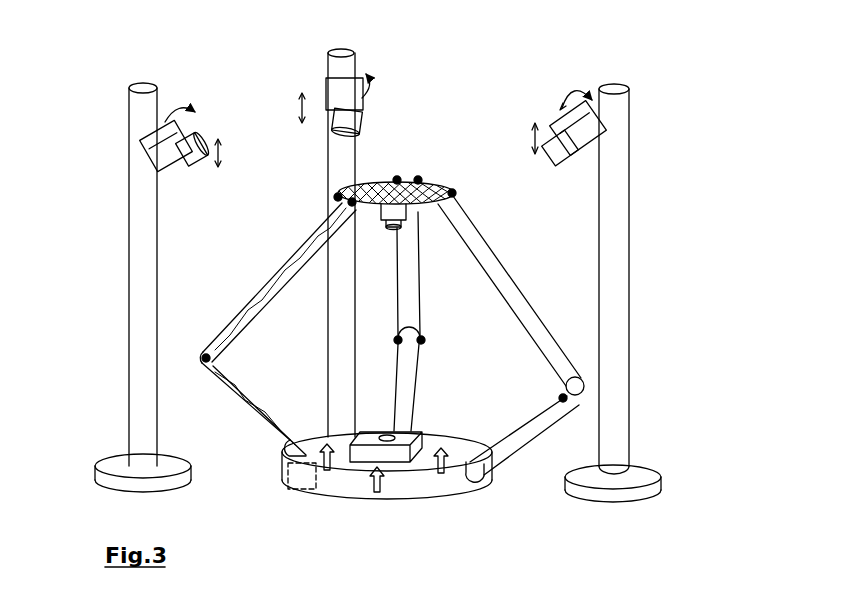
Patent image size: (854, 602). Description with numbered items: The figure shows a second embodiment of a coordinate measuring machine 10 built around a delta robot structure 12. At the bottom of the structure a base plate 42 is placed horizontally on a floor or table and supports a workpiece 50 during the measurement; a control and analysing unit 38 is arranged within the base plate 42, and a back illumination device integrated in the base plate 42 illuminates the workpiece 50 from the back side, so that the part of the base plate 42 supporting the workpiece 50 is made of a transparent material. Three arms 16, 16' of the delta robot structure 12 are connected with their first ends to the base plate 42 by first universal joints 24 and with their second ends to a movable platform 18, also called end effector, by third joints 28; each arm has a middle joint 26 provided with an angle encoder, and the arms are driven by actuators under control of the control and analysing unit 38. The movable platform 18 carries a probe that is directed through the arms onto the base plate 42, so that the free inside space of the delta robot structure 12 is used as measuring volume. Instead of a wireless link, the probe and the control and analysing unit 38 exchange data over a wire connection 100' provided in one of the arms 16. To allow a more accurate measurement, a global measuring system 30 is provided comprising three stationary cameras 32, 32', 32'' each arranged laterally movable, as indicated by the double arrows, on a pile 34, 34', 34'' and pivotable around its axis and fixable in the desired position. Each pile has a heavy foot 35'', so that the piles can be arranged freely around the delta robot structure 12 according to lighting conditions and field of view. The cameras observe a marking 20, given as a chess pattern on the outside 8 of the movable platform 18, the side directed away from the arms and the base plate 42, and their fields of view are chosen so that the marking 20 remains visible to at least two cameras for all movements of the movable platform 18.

The measuring machine 10 is at (455, 64).
The global measuring system 30 is at (647, 90).
The stationary camera 32 is at (625, 128).
The stationary camera 32' is at (312, 95).
The stationary camera 32'' is at (130, 131).
The pile 34 is at (658, 279).
The pile 34' is at (301, 243).
The pile 34'' is at (98, 274).
The heavy foot 35'' is at (378, 493).
The third joint 28 is at (456, 193).
The marking 20 is at (433, 182).
The outside of the movable platform 8 is at (382, 182).
The movable platform 18 is at (337, 181).
The delta robot structure 12 is at (248, 273).
The wire connection 100' is at (242, 409).
The arm 16' is at (581, 291).
The middle joint 26 is at (585, 393).
The arm 16 is at (593, 435).
The first universal joint 24 is at (500, 468).
The control and analysing unit 38 is at (290, 482).
The workpiece 50 is at (350, 462).
The base plate 42 is at (405, 486).